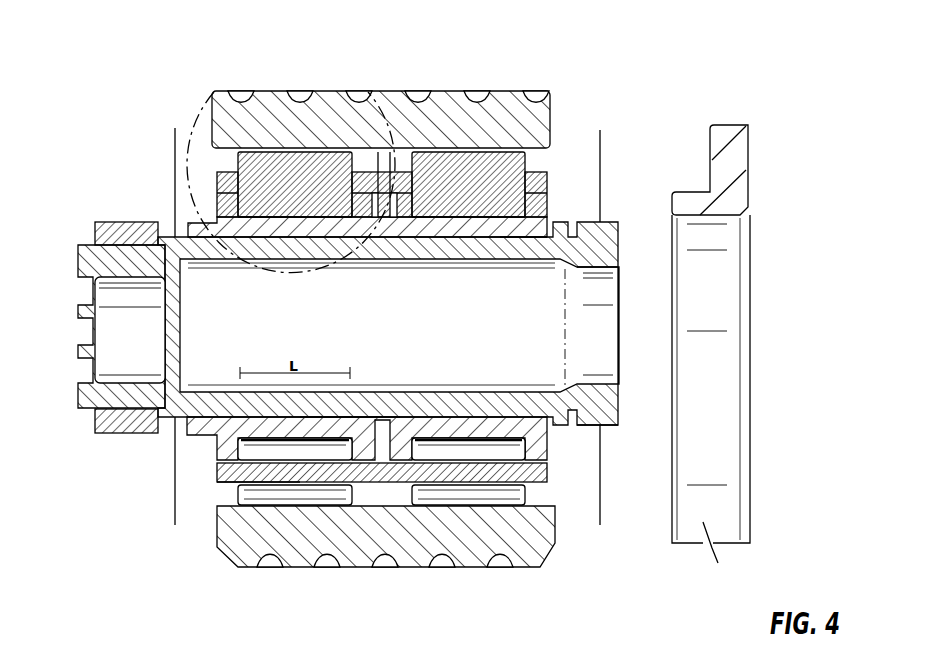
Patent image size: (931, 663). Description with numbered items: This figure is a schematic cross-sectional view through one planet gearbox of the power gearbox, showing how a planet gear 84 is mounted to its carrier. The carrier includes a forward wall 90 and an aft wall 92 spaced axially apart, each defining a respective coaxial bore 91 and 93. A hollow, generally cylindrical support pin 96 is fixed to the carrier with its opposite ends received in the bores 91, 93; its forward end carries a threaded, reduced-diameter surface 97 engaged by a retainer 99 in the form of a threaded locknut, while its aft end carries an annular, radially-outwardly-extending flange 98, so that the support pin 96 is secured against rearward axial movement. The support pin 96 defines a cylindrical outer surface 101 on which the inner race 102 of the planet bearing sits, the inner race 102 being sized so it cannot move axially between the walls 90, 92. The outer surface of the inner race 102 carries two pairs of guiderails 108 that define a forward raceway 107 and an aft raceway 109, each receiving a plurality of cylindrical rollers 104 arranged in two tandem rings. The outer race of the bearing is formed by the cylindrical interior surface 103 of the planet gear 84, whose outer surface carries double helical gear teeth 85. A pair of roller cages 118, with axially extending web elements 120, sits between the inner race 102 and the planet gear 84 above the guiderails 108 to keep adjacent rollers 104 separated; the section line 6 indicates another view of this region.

The planet gear 84 is at (532, 122).
The gear teeth 85 is at (353, 567).
The forward wall 90 is at (174, 152).
The coaxial bore 91 is at (182, 259).
The aft wall 92 is at (600, 183).
The coaxial bore 93 is at (565, 258).
The support pin 96 is at (327, 408).
The reduced-diameter surface 97 is at (128, 240).
The flange 98 is at (600, 405).
The retainer 99 is at (112, 432).
The cylindrical outer surface 101 is at (530, 237).
The inner race 102 is at (400, 424).
The cylindrical interior surface 103 is at (217, 158).
The cylindrical rollers 104 is at (307, 167).
The forward raceway 107 is at (273, 203).
The guiderails 108 is at (382, 448).
The aft raceway 109 is at (475, 208).
The roller cage 118 is at (362, 183).
The web elements 120 is at (283, 474).
The section line 6- 6 is at (243, 68).